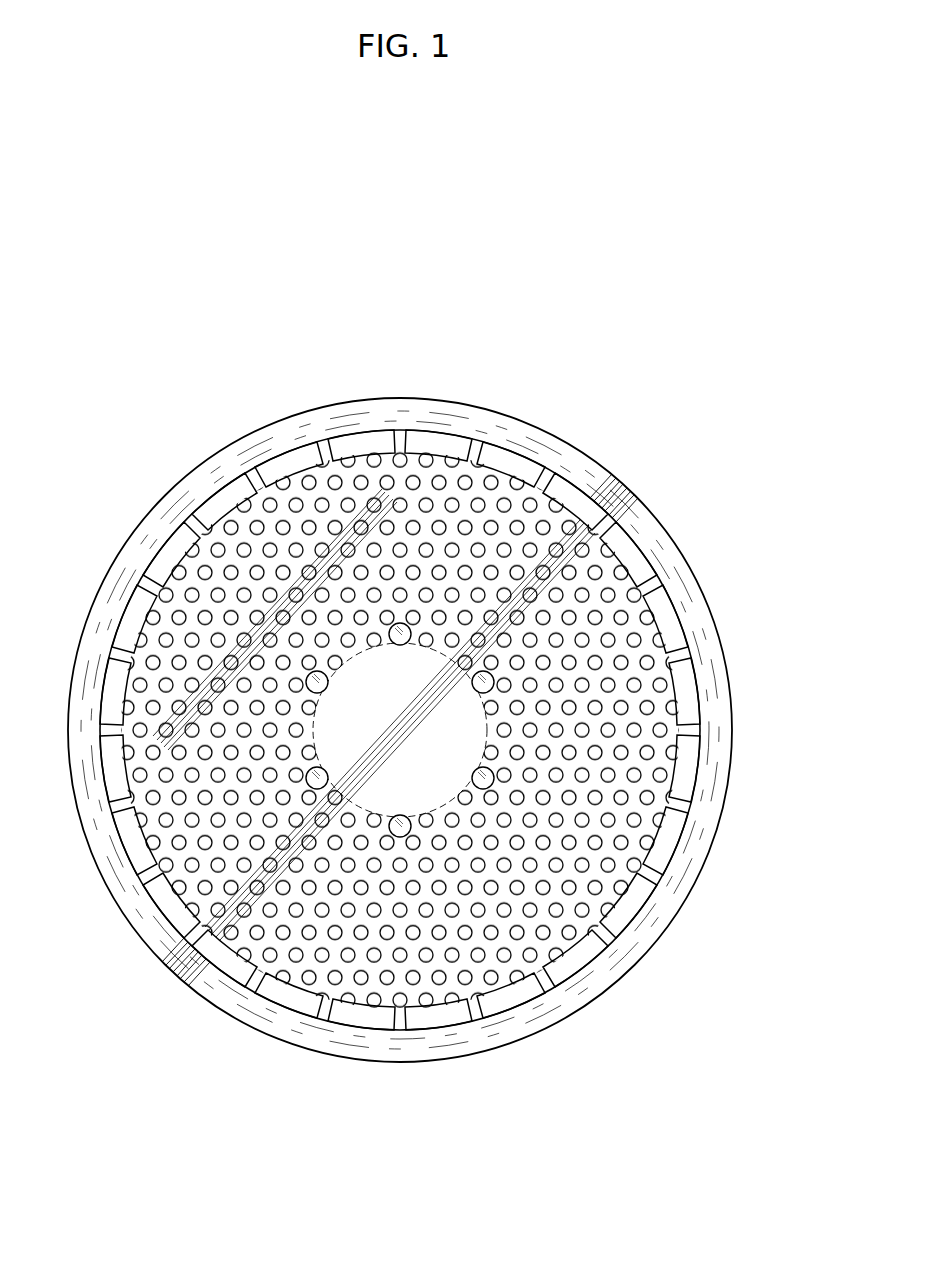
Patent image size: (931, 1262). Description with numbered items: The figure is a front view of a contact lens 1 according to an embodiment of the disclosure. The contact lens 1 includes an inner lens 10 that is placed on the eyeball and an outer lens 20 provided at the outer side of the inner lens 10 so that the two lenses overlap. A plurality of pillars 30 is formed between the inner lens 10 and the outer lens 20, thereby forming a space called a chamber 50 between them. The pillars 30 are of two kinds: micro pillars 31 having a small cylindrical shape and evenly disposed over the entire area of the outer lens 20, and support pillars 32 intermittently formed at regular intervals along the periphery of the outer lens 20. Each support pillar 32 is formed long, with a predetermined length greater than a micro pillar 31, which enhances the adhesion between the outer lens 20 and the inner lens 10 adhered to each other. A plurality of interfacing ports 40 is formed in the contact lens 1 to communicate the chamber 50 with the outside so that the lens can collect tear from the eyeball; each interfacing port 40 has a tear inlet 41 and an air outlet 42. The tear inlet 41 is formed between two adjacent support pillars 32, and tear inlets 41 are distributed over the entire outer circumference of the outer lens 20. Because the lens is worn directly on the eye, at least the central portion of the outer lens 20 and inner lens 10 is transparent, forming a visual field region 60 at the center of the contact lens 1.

The contact lens 1 is at (202, 390).
The inner lens 10 is at (640, 958).
The outer lens 20 is at (633, 850).
The pillars 30 is at (334, 781).
The micro pillars 31 is at (193, 910).
The support pillars 32 is at (217, 973).
The interfacing ports 40 is at (470, 788).
The tear inlet 41 is at (323, 1017).
The air outlet 42 is at (497, 775).
The chamber 50 is at (637, 698).
The visual field region 60 is at (413, 672).